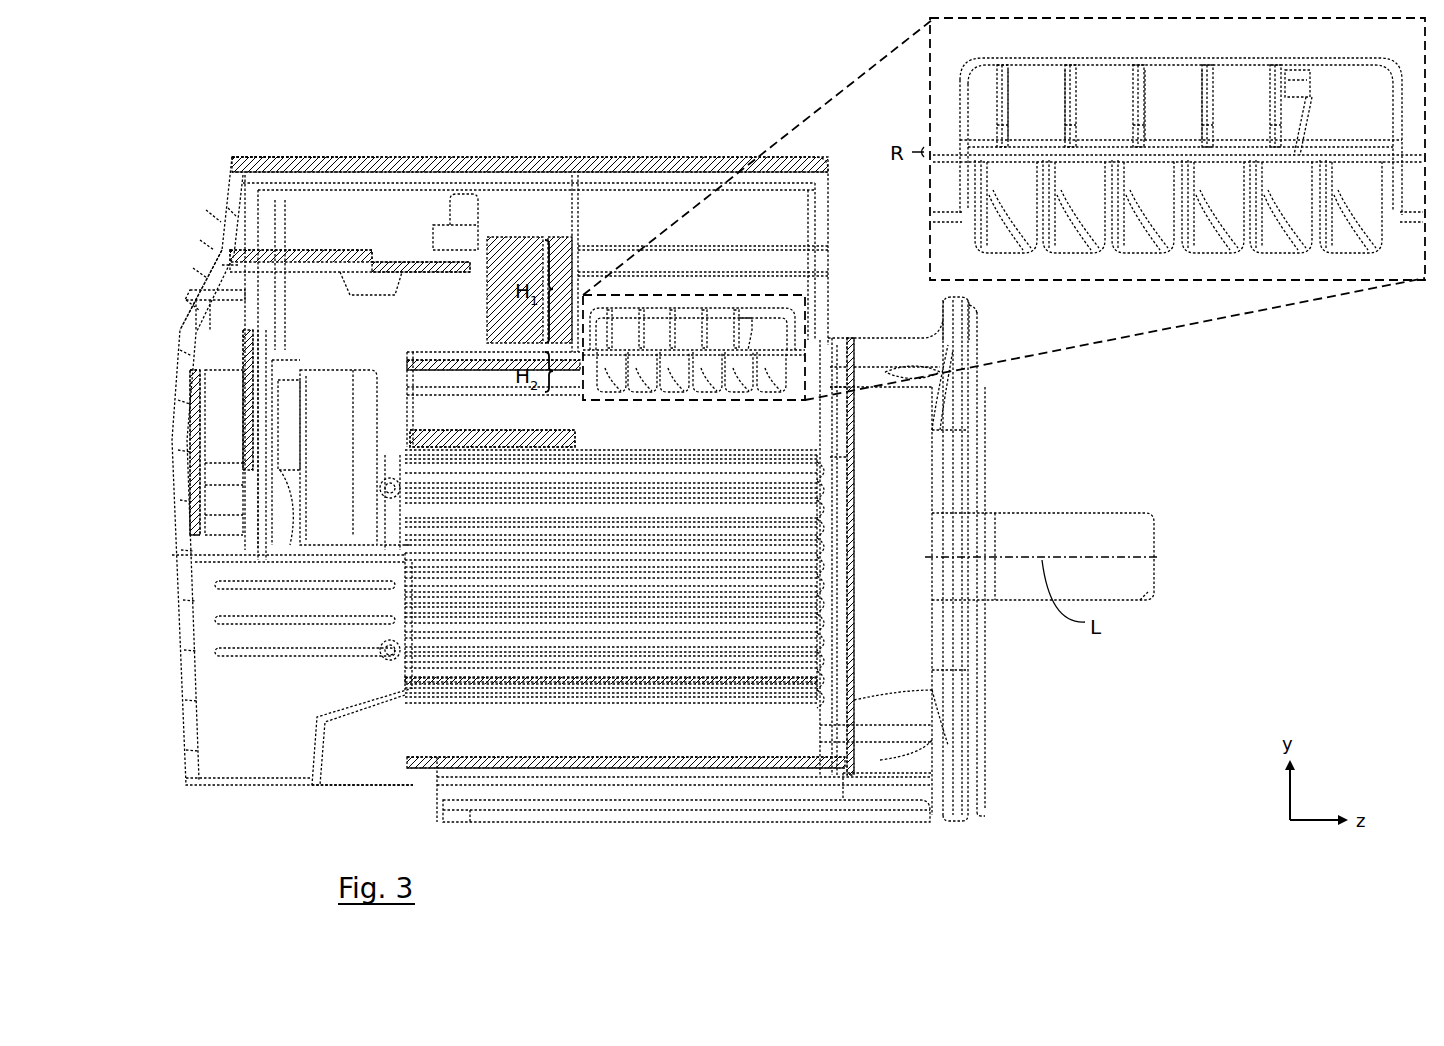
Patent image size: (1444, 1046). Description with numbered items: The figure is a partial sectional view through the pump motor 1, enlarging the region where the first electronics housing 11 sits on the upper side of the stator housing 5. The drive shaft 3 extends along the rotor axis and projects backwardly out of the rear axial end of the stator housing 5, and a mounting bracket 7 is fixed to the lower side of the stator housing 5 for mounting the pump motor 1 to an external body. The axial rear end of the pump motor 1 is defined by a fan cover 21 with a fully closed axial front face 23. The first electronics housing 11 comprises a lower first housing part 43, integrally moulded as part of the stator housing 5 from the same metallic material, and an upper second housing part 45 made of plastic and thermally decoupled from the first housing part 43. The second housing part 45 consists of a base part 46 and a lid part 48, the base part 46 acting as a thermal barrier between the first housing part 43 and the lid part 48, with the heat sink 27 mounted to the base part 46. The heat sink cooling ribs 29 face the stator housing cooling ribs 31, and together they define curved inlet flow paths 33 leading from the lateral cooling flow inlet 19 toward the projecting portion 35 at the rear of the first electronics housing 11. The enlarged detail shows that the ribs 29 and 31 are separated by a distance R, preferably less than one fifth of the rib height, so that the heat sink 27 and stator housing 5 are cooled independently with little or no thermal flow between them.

The pump motor 1 is at (255, 57).
The drive shaft 3 is at (1072, 523).
The stator housing 5 is at (548, 438).
The mounting bracket 7 is at (716, 795).
The first electronics housing 11 is at (610, 122).
The cooling flow inlet 19 is at (1288, 45).
The fan cover 21 is at (172, 519).
The axial front face 23 is at (172, 448).
The heat sink 27 is at (520, 250).
The heat sink cooling ribs 29 is at (235, 442).
The stator housing cooling ribs 31 is at (1218, 195).
The inlet flow paths 33 is at (1165, 102).
The projecting portion 35 is at (372, 152).
The first housing part 43 is at (220, 298).
The second housing part 45 is at (170, 182).
The base part 46 is at (225, 268).
The lid part 48 is at (230, 211).